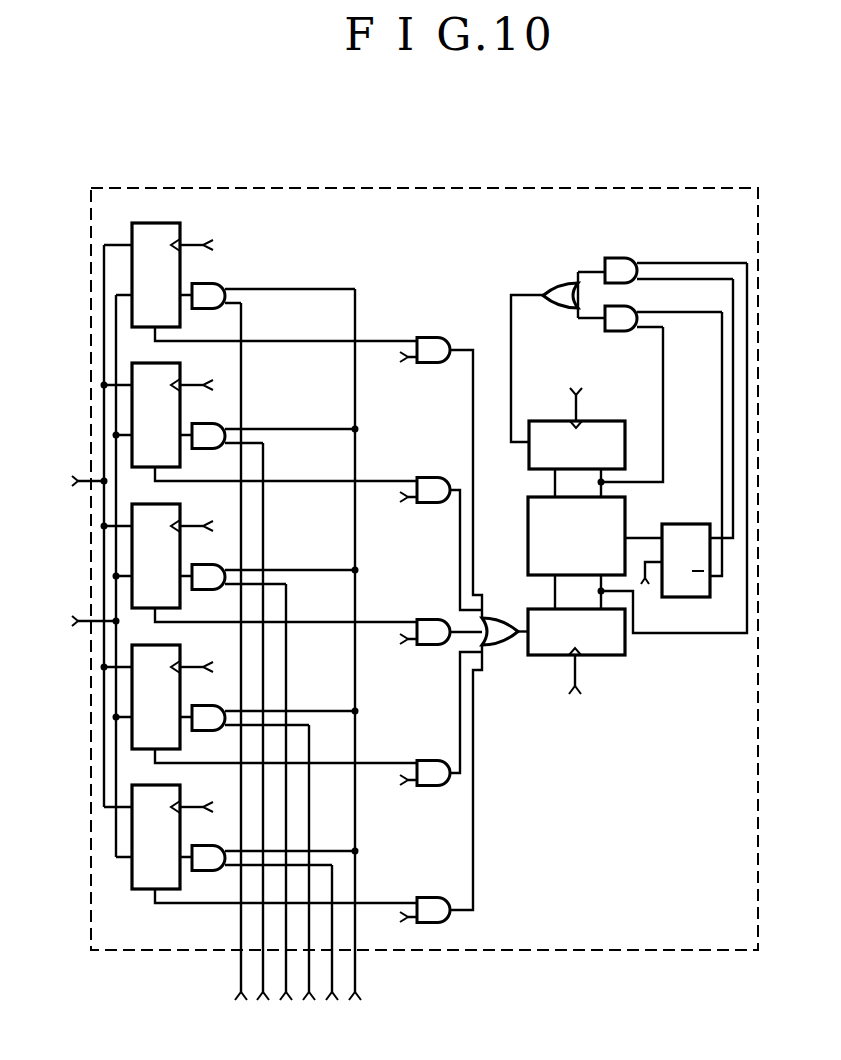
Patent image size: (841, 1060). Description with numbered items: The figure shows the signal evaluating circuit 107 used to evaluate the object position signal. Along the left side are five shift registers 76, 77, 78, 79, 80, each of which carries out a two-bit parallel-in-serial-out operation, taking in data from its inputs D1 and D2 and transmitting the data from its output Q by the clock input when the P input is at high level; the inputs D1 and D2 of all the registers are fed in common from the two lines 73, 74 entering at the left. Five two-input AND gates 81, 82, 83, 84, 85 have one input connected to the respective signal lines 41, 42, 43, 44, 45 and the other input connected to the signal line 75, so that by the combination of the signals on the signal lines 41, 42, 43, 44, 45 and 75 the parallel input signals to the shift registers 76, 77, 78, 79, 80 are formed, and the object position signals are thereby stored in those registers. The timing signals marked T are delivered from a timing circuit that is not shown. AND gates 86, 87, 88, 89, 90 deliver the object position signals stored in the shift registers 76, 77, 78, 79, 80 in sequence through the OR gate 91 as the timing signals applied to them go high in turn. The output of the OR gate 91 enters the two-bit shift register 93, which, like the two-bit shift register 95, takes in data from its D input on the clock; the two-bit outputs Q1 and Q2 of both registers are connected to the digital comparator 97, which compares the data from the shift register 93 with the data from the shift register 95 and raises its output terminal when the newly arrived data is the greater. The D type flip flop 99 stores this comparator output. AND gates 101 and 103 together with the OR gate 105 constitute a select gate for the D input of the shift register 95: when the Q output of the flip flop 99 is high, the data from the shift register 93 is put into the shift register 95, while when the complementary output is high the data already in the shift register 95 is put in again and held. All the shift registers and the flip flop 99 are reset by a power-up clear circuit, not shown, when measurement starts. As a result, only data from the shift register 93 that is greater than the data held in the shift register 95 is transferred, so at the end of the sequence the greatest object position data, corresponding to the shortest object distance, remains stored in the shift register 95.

The signal line 41 is at (239, 668).
The signal line 42 is at (261, 738).
The signal line 43 is at (285, 809).
The signal line 44 is at (308, 879).
The signal line 45 is at (331, 949).
The input line 73 is at (89, 526).
The input line 74 is at (89, 576).
The signal line 75 is at (354, 661).
The shift register 76 is at (178, 223).
The shift register 77 is at (178, 363).
The shift register 78 is at (178, 504).
The shift register 79 is at (178, 645).
The shift register 80 is at (176, 785).
The 2-input AND gate 81 is at (222, 283).
The 2-input AND gate 82 is at (216, 423).
The 2-input AND gate 83 is at (216, 564).
The 2-input AND gate 84 is at (216, 705).
The 2-input AND gate 85 is at (202, 871).
The AND gate 86 is at (432, 337).
The AND gate 87 is at (432, 477).
The AND gate 88 is at (432, 619).
The AND gate 89 is at (432, 760).
The AND gate 90 is at (432, 897).
The OR gate 91 is at (500, 618).
The 2-bit shift register 93 is at (607, 655).
The 2-bit shift register 95 is at (610, 421).
The digital comparator 97 is at (627, 505).
The D type flip flop 99 is at (690, 524).
The AND gate 101 is at (626, 258).
The AND gate 103 is at (617, 331).
The OR gate 105 is at (562, 283).
The signal evaluating circuit 107 is at (725, 188).